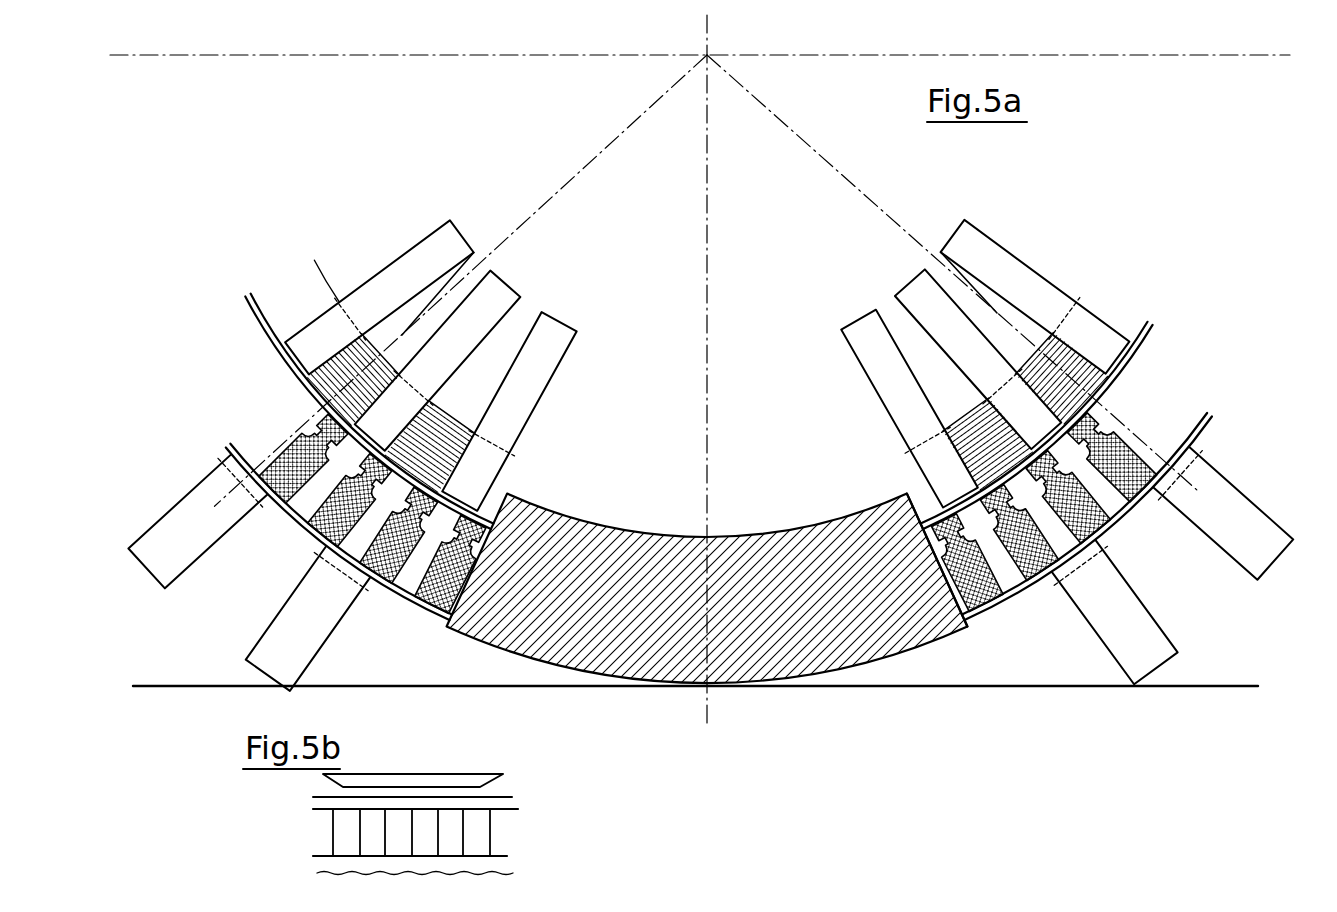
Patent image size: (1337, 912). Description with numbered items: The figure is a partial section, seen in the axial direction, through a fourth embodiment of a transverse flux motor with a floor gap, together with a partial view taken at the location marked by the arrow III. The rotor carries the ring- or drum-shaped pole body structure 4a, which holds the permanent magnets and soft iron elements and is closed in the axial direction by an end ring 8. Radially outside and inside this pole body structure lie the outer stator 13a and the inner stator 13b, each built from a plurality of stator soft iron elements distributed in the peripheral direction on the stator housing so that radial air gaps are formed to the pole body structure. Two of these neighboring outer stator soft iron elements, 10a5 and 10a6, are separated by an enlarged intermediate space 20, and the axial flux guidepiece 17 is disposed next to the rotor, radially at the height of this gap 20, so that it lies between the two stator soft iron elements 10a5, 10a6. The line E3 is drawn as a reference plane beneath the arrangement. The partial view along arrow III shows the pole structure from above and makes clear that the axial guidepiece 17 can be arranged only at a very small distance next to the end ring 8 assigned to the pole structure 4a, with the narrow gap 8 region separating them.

In FIG. 5a, the pole body structure 4a is at (1161, 384).
In FIG. 5b, the pole body structure 4a is at (495, 835).
In FIG. 5b, the end ring 8 is at (407, 798).
In FIG. 5a, the stator soft iron element 10a5 is at (314, 644).
In FIG. 5a, the stator soft iron element 10a6 is at (1140, 627).
In FIG. 5a, the outer stator 13a is at (1076, 287).
In FIG. 5a, the inner stator 13b is at (1228, 467).
In FIG. 5a, the axial flux guidepiece 17 is at (678, 680).
In FIG. 5b, the axial flux guidepiece 17 is at (468, 782).
In FIG. 5a, the enlarged intermediate space 20 is at (970, 618).
In FIG. 5a, the reference plane E3 is at (1195, 686).
In FIG. 5a, the view arrow III is at (769, 702).